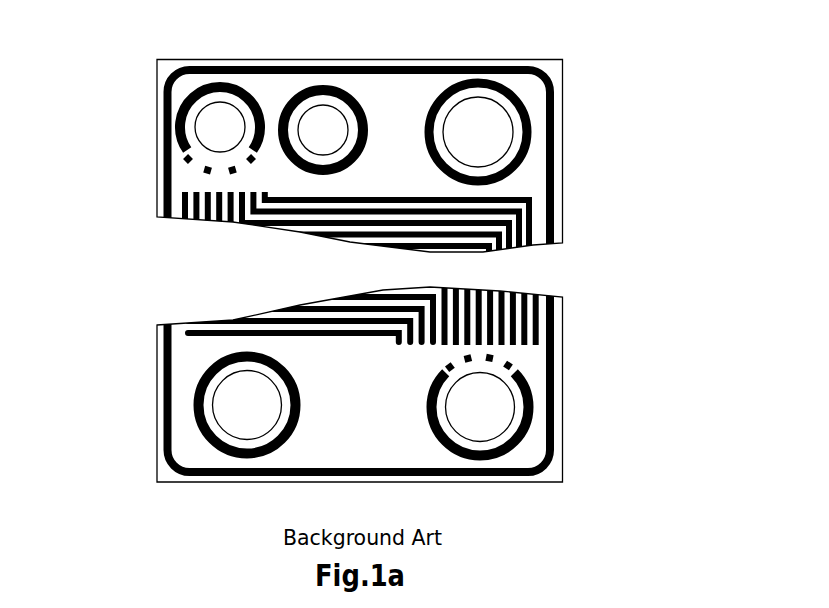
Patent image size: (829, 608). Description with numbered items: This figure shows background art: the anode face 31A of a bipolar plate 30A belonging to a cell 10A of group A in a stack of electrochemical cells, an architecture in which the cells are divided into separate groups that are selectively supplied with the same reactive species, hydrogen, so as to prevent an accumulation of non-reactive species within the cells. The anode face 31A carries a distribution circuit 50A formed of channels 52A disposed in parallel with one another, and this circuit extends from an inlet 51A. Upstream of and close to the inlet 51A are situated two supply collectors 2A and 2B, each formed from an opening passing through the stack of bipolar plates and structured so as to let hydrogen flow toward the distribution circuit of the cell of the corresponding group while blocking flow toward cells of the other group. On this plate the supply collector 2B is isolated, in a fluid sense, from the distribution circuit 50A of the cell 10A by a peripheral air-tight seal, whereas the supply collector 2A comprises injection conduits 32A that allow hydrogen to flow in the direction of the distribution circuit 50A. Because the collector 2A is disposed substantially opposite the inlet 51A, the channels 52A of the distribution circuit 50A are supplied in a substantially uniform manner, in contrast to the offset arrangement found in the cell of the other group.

The cell 10A is at (634, 82).
The bipolar plate 30A is at (528, 49).
The anode face 31A is at (407, 103).
The supply collector 2A is at (220, 127).
The supply collector 2B is at (321, 132).
The injection conduits 32A is at (183, 172).
The inlet 51A is at (170, 193).
The channels 52A is at (528, 228).
The distribution circuit 50A is at (170, 230).